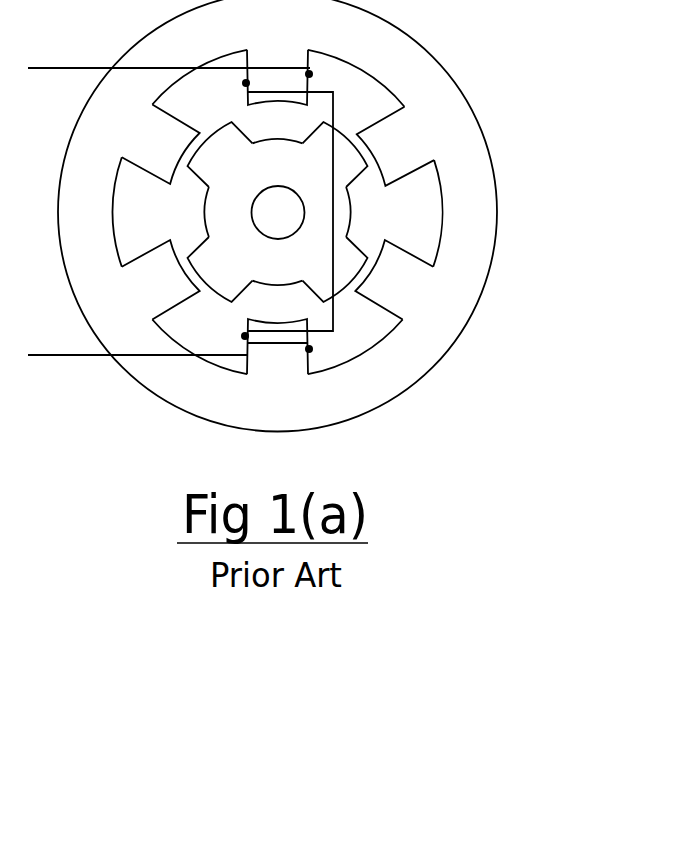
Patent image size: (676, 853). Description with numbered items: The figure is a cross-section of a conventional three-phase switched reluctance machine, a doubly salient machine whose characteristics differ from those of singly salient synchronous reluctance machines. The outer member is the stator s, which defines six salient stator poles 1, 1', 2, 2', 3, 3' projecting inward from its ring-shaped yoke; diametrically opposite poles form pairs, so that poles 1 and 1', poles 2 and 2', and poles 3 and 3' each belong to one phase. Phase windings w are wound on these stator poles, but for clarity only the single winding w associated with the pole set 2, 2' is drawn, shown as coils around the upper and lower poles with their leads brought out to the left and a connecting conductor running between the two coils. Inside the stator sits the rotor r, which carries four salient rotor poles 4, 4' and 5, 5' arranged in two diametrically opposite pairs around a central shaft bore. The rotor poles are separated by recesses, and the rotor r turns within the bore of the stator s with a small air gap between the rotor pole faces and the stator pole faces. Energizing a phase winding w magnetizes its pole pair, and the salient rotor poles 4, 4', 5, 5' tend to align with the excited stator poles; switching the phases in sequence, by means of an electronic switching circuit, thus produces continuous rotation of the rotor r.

The salient stator pole 1 is at (161, 145).
The salient stator pole 2 is at (277, 65).
The salient stator pole 3 is at (395, 146).
The salient stator pole 1' is at (394, 280).
The salient stator pole 2' is at (277, 359).
The salient stator pole 3' is at (161, 280).
The salient rotor pole 4 is at (335, 154).
The salient rotor pole 5 is at (335, 269).
The salient rotor pole 4' is at (220, 269).
The salient rotor pole 5' is at (220, 154).
The stator s is at (465, 100).
The rotor r is at (358, 213).
The phase winding w is at (340, 322).